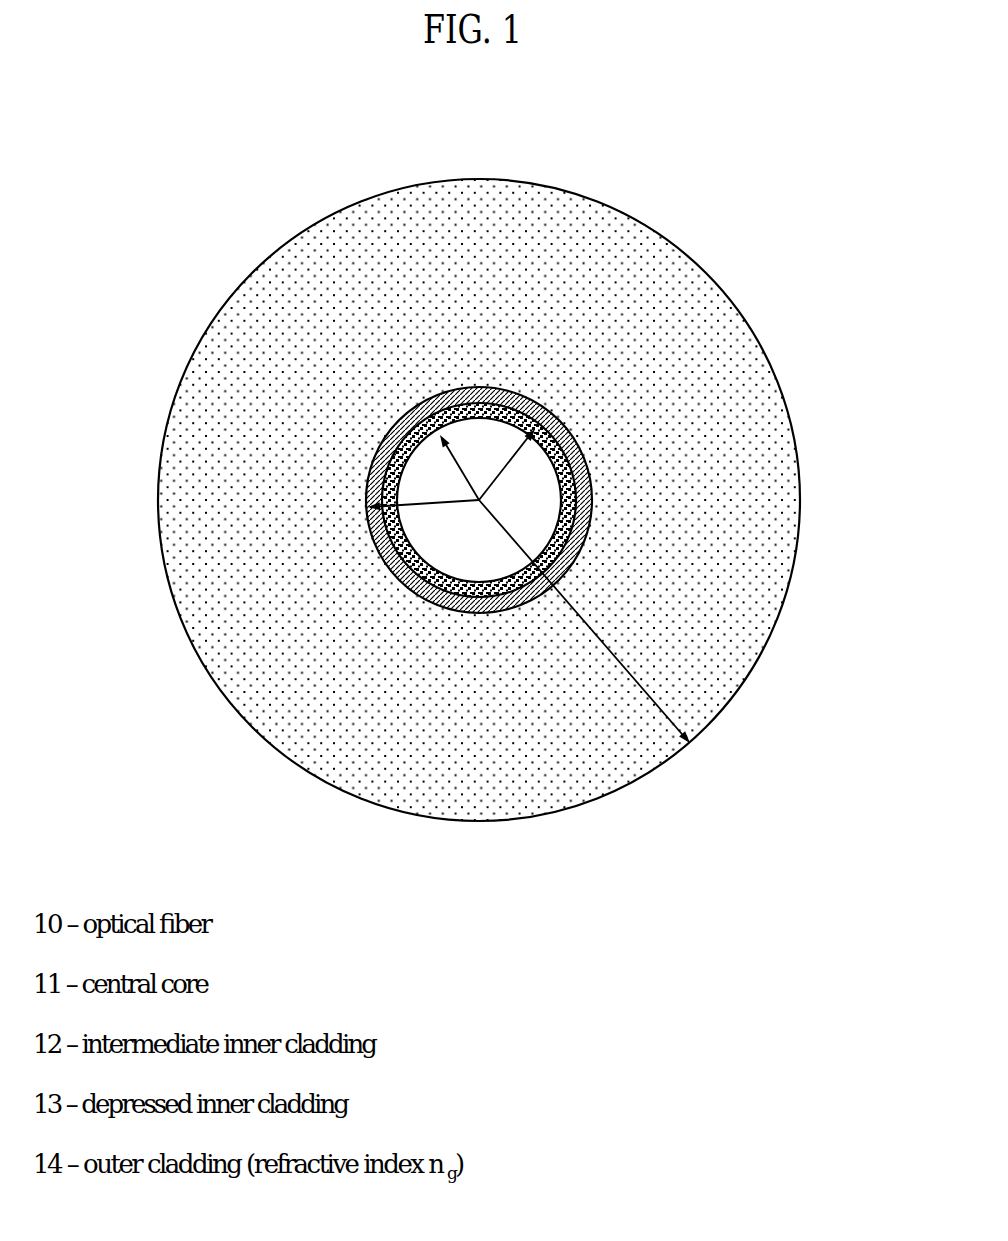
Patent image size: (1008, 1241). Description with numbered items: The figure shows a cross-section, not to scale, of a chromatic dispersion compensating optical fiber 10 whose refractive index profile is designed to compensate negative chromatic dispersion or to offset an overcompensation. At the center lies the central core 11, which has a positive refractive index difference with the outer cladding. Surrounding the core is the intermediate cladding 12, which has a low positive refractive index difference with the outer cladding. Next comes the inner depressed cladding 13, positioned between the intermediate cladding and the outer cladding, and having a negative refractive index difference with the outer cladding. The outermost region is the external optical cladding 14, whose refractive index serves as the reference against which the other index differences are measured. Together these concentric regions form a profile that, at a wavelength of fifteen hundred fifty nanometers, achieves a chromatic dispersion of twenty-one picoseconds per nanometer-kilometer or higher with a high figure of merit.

The chromatic dispersion compensating optical fiber 10 is at (700, 212).
The central core 11 is at (316, 453).
The intermediate cladding 12 is at (538, 432).
The inner depressed cladding 13 is at (319, 500).
The external optical cladding 14 is at (697, 645).